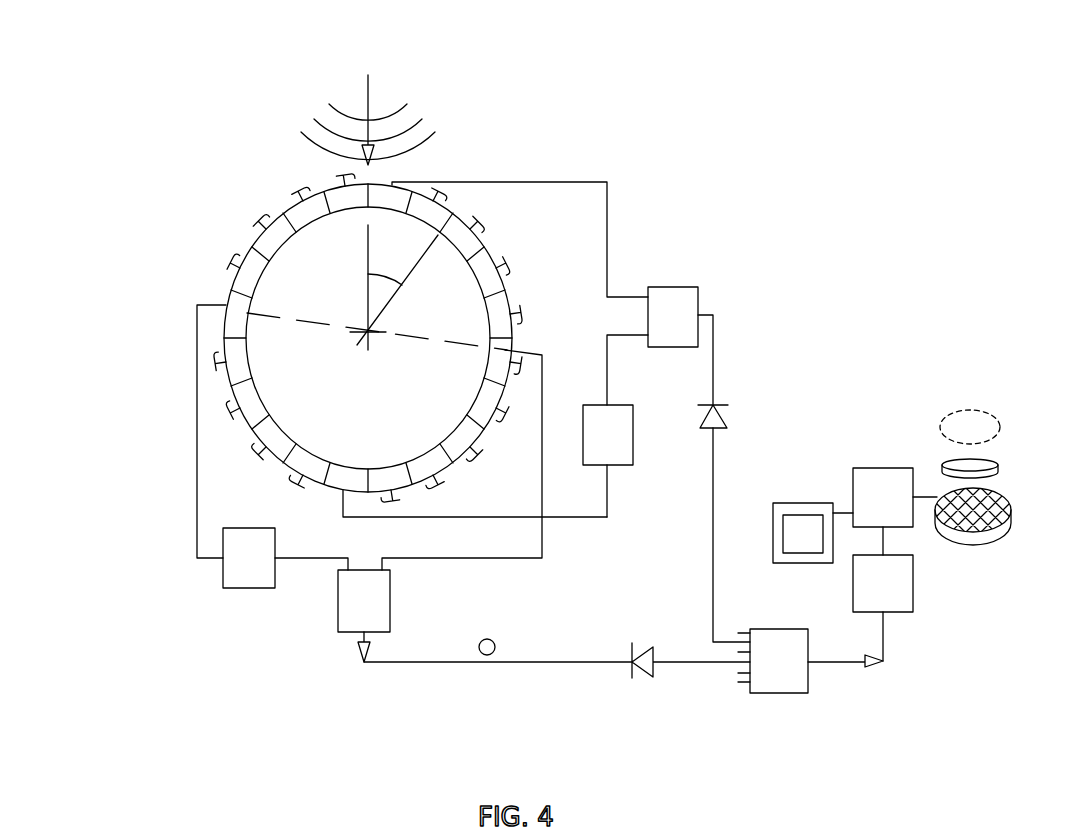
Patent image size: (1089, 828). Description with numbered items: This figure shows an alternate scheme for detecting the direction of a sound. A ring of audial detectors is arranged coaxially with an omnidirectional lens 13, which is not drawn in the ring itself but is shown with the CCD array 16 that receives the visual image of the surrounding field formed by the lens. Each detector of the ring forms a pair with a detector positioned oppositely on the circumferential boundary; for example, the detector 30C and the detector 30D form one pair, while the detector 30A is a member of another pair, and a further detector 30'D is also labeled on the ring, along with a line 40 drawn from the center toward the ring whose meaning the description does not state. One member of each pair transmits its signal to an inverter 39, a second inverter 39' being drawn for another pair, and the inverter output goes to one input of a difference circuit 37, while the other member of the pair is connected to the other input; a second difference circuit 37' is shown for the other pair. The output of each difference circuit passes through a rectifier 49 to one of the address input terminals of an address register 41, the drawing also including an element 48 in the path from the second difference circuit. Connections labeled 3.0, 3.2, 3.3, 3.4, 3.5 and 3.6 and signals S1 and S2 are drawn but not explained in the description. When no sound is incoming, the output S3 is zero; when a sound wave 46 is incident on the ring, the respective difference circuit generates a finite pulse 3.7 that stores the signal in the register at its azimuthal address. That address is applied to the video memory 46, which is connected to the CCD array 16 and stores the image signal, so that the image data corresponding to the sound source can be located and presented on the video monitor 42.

The sound wave 46 is at (368, 100).
The audial detector 30A is at (243, 327).
The audial detector 30C is at (385, 202).
The audial detector 30D is at (343, 478).
The ring segment 30'D is at (552, 315).
The angular position line 40 is at (435, 340).
The omnidirectional lens 13 is at (938, 413).
The CCD array 16 is at (1000, 532).
The difference circuit 37 is at (362, 620).
The processing unit 37' is at (673, 317).
The inverter 39 is at (285, 558).
The processing unit 39' is at (608, 461).
The address register 41 is at (794, 675).
The video monitor 42 is at (818, 547).
The diode 48 is at (727, 417).
The rectifier 49 is at (645, 650).
The signal line 3.0 is at (189, 431).
The signal line 3.2 is at (475, 460).
The signal line 3.3 is at (498, 648).
The signal line 3.4 is at (522, 239).
The signal line 3.5 is at (628, 354).
The signal line 3.6 is at (742, 606).
The finite pulse 3.7 is at (870, 656).
The signal S1 is at (734, 535).
The signal / switch unit S2 is at (900, 597).
The output signal S3 is at (906, 631).